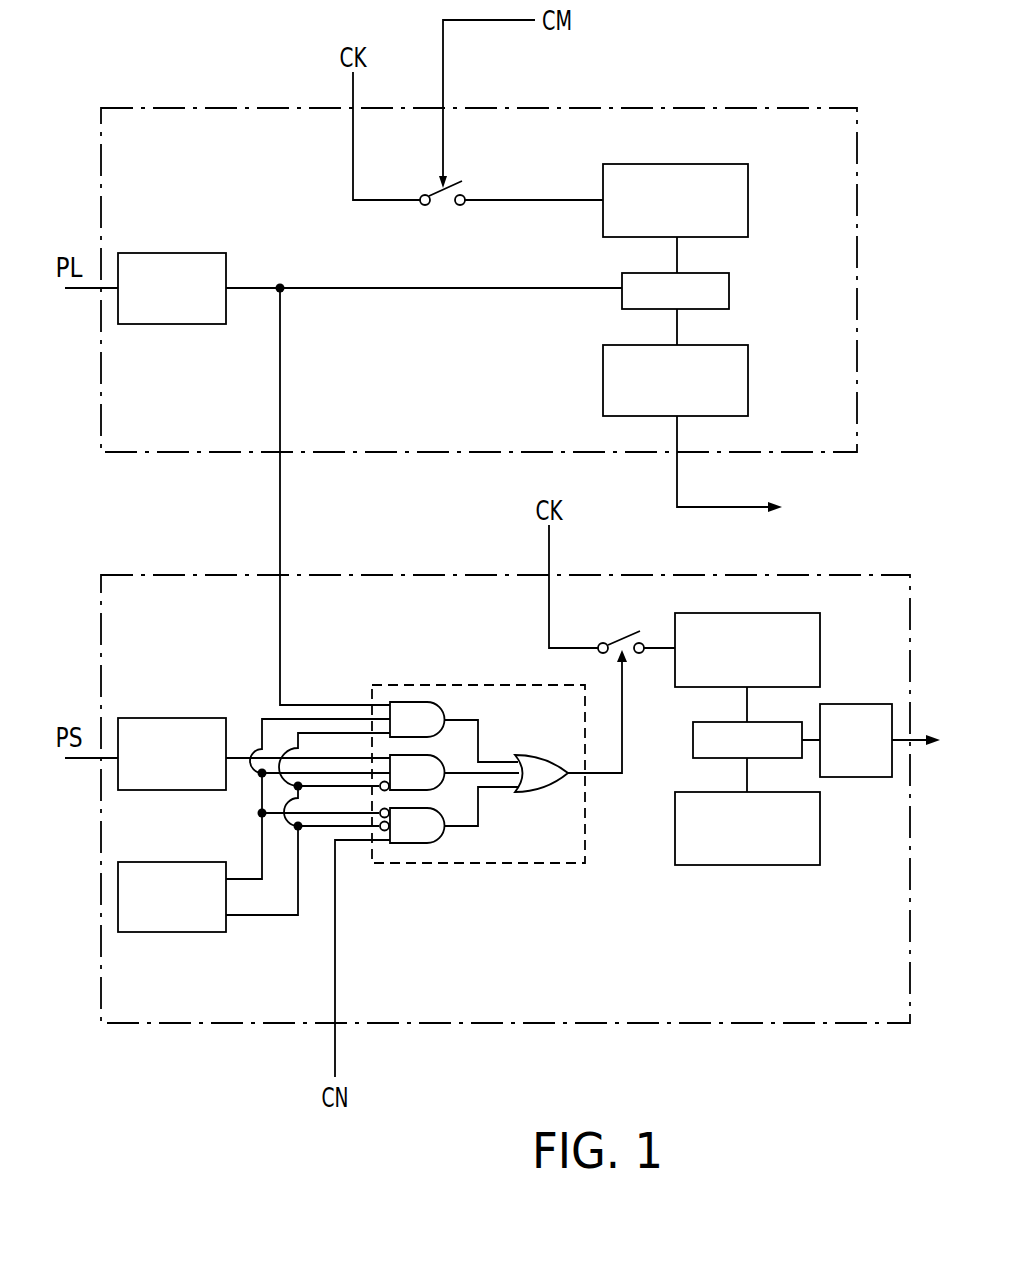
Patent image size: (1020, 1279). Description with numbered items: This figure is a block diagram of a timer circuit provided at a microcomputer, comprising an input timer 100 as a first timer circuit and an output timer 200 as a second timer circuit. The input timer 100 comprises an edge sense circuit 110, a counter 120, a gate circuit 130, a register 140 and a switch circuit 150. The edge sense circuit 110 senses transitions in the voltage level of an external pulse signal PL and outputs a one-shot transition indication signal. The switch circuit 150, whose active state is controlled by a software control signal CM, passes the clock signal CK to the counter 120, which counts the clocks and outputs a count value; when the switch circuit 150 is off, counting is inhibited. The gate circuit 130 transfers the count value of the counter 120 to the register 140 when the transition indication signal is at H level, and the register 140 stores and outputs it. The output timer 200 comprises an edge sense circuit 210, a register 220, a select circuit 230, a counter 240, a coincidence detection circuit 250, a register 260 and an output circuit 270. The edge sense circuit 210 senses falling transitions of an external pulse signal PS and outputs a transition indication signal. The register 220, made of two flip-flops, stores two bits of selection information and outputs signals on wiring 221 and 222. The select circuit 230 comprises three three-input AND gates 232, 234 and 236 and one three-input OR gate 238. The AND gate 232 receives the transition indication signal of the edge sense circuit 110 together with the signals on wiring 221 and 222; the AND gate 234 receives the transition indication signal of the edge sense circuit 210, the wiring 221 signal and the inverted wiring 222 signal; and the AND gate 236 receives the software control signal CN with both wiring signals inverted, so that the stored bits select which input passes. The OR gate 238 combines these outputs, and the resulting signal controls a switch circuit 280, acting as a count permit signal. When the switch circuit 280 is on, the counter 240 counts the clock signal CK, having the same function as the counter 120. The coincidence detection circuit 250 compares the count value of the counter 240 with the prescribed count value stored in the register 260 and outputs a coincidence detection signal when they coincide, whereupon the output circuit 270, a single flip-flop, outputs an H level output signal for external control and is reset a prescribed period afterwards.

The input timer 100 is at (187, 120).
The edge sense circuit 110 is at (176, 313).
The counter 120 is at (690, 170).
The gate circuit 130 is at (728, 290).
The register 140 is at (617, 376).
The switch circuit 150 is at (445, 205).
The output timer 200 is at (170, 587).
The edge sense circuit 210 is at (165, 730).
The register 220 is at (183, 927).
The wiring 221 is at (259, 838).
The wiring 222 is at (272, 920).
The select circuit 230 is at (400, 690).
The AND gate 232 is at (425, 714).
The AND gate 234 is at (422, 768).
The AND gate 236 is at (414, 834).
The OR gate 238 is at (533, 782).
The counter 240 is at (806, 645).
The coincidence detection circuit 250 is at (690, 748).
The register 260 is at (757, 848).
The output circuit 270 is at (862, 762).
The switch circuit 280 is at (622, 632).